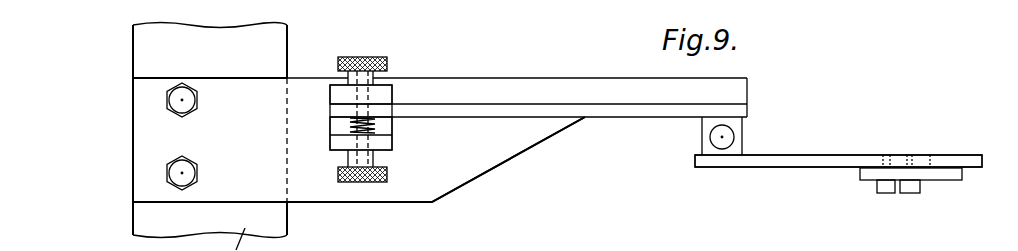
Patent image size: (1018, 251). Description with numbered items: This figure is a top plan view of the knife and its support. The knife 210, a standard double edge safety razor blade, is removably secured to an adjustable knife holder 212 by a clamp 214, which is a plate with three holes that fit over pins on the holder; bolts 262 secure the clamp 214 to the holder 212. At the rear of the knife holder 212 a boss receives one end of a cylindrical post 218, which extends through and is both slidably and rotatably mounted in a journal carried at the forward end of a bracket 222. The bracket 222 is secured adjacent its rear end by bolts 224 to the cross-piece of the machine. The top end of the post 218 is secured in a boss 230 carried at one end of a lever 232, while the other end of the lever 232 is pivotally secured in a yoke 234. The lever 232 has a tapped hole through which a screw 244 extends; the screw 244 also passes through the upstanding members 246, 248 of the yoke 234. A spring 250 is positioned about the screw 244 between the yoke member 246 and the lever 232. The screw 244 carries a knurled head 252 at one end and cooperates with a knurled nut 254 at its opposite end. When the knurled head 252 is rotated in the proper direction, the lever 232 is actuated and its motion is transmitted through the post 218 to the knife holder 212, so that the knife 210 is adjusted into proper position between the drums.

The knife 210 is at (963, 168).
The knife holder 212 is at (850, 157).
The clamp 214 is at (938, 175).
The cylindrical post 218 is at (730, 137).
The bracket 222 is at (748, 92).
The bolts 224 is at (186, 117).
The boss 230 is at (701, 128).
The lever 232 is at (600, 110).
The yoke 234 is at (337, 143).
The screw 244 is at (362, 56).
The upstanding member 246 is at (392, 140).
The upstanding member 248 is at (392, 90).
The spring 250 is at (353, 118).
The knurled head 252 is at (387, 173).
The knurled nut 254 is at (387, 65).
The bolts 262 is at (882, 193).